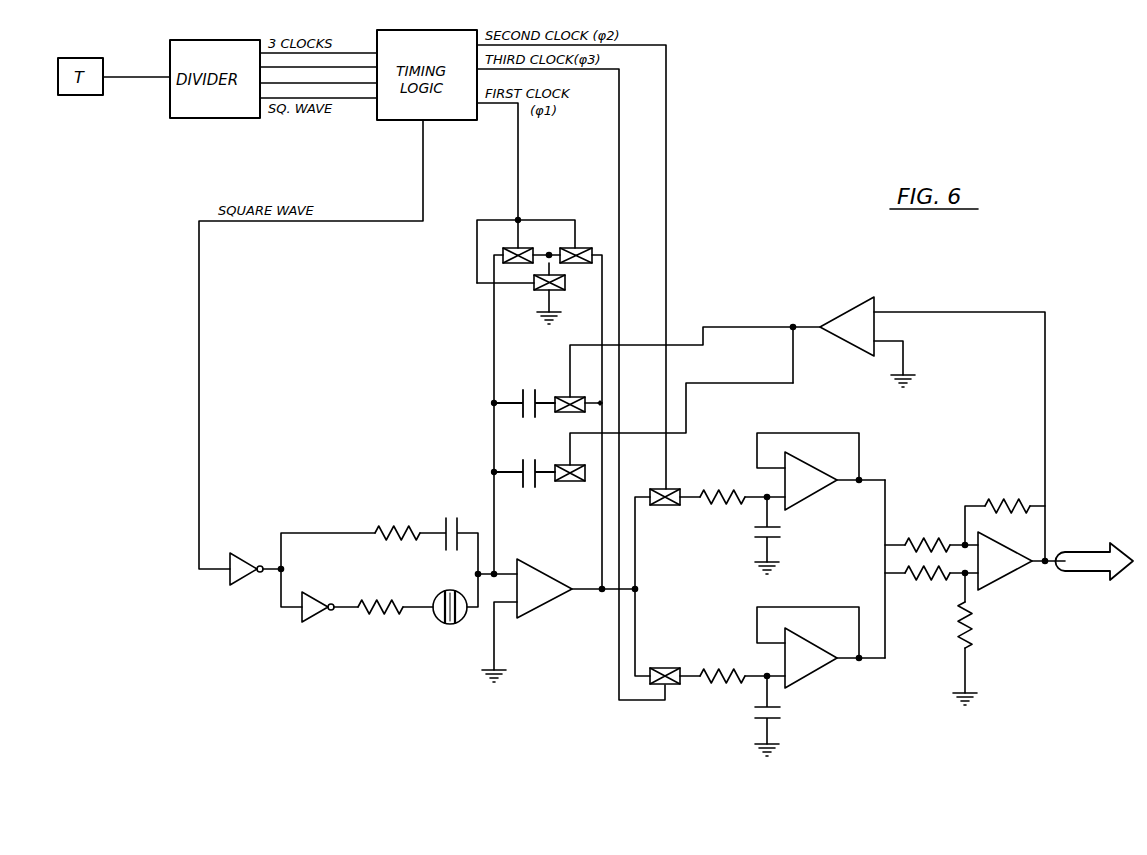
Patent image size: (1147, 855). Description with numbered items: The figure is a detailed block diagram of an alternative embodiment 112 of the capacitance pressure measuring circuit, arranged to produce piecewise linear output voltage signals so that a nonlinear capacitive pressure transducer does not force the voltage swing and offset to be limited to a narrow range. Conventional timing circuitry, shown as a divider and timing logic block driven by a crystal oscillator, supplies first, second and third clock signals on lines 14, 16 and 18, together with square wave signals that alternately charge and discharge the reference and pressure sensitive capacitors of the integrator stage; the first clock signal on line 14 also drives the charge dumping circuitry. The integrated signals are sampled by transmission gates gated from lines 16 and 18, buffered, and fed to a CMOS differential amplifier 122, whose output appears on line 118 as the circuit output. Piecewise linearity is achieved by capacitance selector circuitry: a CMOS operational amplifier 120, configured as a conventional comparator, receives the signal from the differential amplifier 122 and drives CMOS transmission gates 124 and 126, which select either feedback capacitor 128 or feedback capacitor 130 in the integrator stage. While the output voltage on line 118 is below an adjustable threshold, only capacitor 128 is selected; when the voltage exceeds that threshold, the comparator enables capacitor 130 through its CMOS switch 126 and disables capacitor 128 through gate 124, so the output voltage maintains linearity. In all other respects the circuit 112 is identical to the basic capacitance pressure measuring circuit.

The line 14 is at (518, 178).
The line 16 is at (666, 184).
The line 18 is at (619, 184).
The alternative embodiment of the capacitance pressure measuring circuit 112 is at (796, 139).
The output line 118 is at (1088, 558).
The CMOS operational amplifier 120 is at (852, 316).
The CMOS differential amplifier 122 is at (1004, 569).
The CMOS transmission gate 124 is at (558, 396).
The CMOS transmission gate 126 is at (558, 465).
The feedback capacitor 128 is at (518, 388).
The feedback capacitor 130 is at (518, 484).